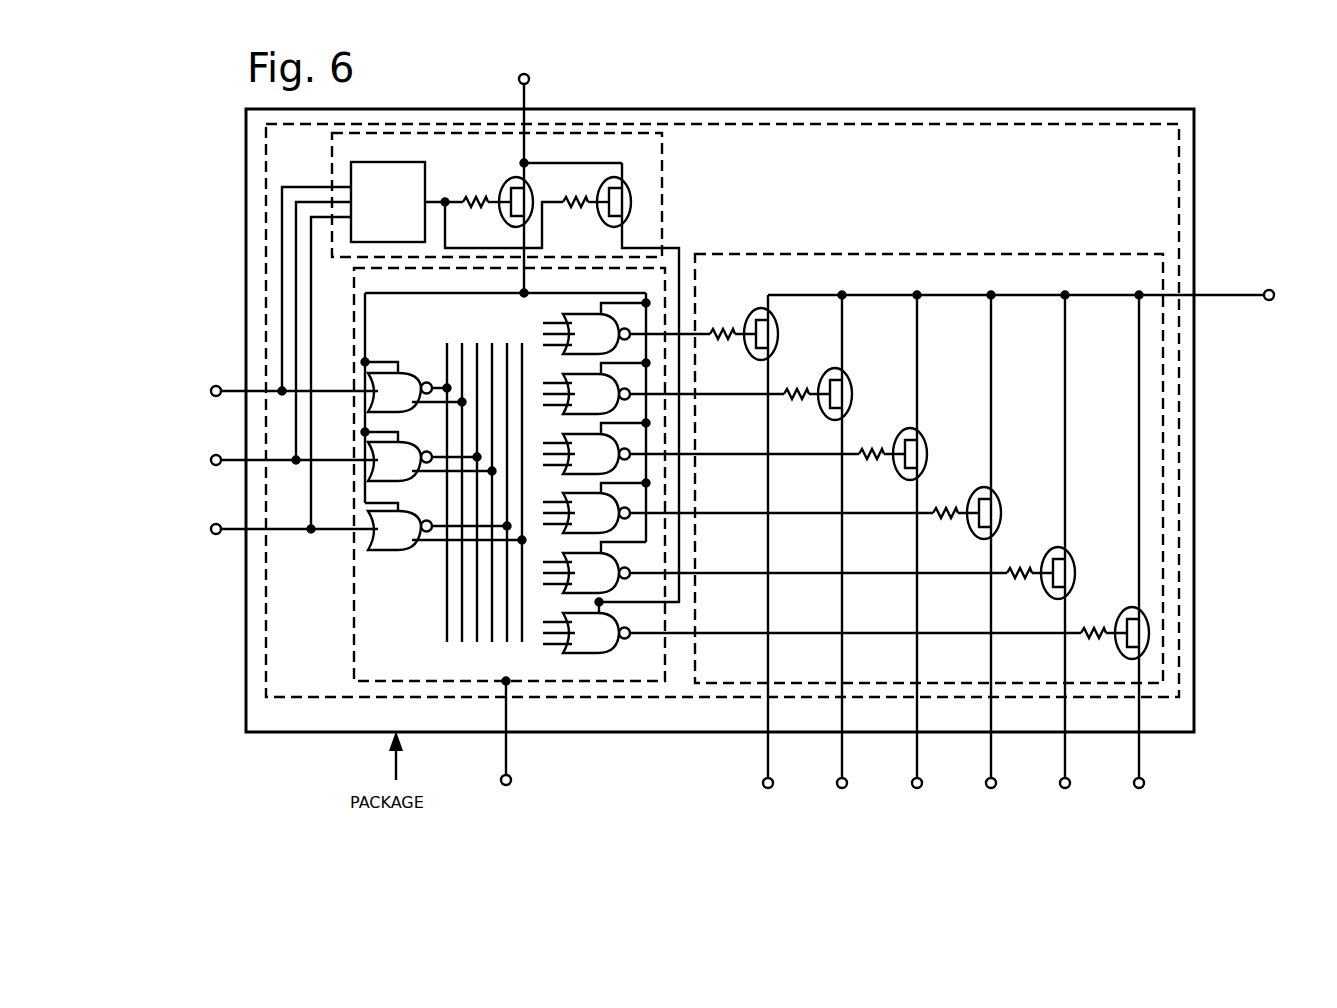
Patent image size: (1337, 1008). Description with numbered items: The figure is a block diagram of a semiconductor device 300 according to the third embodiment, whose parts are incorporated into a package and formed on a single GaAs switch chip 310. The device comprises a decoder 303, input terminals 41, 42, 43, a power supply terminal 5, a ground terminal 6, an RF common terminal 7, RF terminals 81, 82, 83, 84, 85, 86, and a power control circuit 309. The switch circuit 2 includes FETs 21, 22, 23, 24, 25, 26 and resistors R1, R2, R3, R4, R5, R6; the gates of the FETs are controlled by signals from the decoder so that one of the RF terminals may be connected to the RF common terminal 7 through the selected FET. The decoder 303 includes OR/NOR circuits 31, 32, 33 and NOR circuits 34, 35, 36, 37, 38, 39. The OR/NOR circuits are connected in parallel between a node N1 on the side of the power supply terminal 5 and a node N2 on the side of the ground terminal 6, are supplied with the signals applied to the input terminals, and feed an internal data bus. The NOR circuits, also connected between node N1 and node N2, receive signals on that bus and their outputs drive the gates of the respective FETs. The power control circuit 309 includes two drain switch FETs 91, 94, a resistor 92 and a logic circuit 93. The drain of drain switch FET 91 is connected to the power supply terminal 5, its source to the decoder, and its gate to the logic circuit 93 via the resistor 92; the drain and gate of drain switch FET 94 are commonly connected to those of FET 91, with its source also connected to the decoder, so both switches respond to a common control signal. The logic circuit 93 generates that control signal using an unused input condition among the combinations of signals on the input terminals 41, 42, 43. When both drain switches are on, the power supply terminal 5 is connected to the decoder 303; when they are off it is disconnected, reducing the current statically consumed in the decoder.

The semiconductor device 300 is at (740, 56).
The GaAs switch chip 310 is at (858, 124).
The power control circuit 309 is at (665, 176).
The decoder 303 is at (537, 683).
The switch circuit 2 is at (934, 254).
The power supply terminal 5 is at (529, 75).
The ground terminal 6 is at (510, 785).
The RF common terminal 7 is at (1269, 283).
The logic circuit 93 is at (425, 178).
The drain switch FET 91 is at (503, 182).
The resistor 92 is at (486, 213).
The drain switch FET 94 is at (598, 213).
The node N1 is at (527, 286).
The node N2 is at (503, 683).
The OR/NOR circuit 31 is at (410, 372).
The OR/NOR circuit 32 is at (410, 441).
The OR/NOR circuit 33 is at (410, 509).
The NOR circuit 34 is at (588, 356).
The NOR circuit 35 is at (588, 416).
The NOR circuit 36 is at (588, 476).
The NOR circuit 37 is at (588, 535).
The NOR circuit 38 is at (588, 595).
The NOR circuit 39 is at (588, 655).
The input terminal 41 is at (212, 386).
The input terminal 42 is at (212, 455).
The input terminal 43 is at (212, 525).
The resistor R1 is at (714, 328).
The resistor R2 is at (797, 388).
The resistor R3 is at (870, 448).
The resistor R4 is at (945, 507).
The resistor R5 is at (1017, 567).
The resistor R6 is at (1093, 627).
The FET 21 is at (756, 308).
The FET 22 is at (829, 368).
The FET 23 is at (903, 428).
The FET 24 is at (978, 487).
The FET 25 is at (1050, 547).
The FET 26 is at (1126, 607).
The RF terminal 81 is at (763, 789).
The RF terminal 82 is at (838, 789).
The RF terminal 83 is at (912, 789).
The RF terminal 84 is at (986, 789).
The RF terminal 85 is at (1067, 789).
The RF terminal 86 is at (1141, 789).